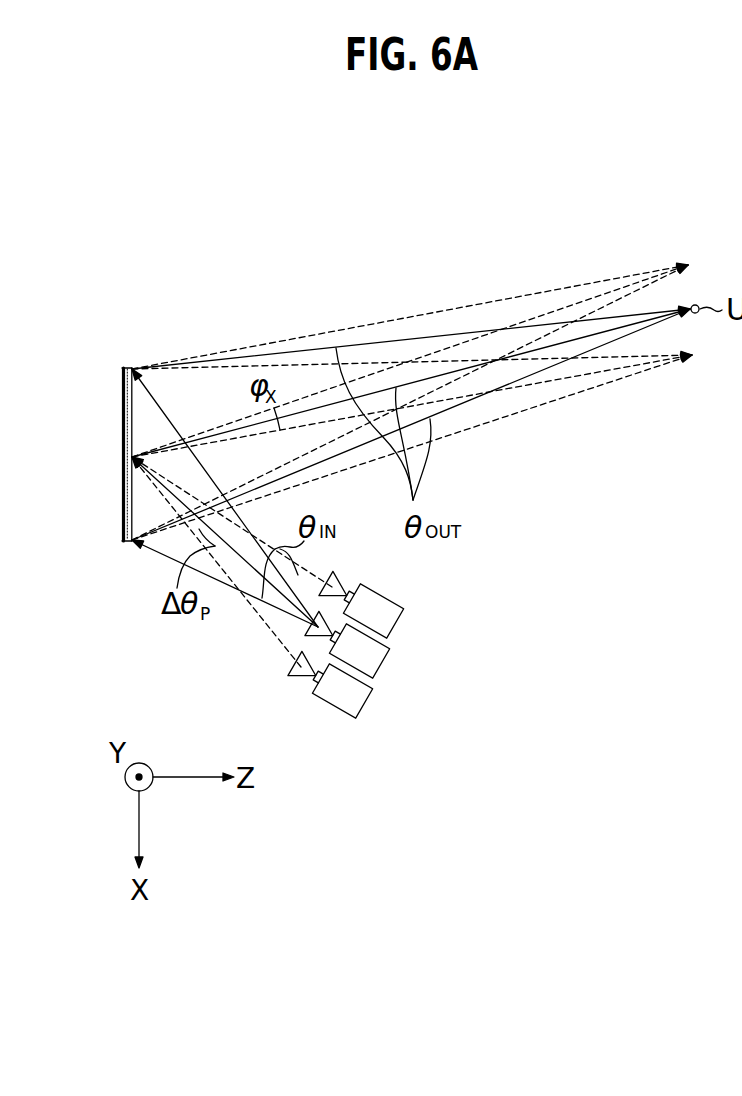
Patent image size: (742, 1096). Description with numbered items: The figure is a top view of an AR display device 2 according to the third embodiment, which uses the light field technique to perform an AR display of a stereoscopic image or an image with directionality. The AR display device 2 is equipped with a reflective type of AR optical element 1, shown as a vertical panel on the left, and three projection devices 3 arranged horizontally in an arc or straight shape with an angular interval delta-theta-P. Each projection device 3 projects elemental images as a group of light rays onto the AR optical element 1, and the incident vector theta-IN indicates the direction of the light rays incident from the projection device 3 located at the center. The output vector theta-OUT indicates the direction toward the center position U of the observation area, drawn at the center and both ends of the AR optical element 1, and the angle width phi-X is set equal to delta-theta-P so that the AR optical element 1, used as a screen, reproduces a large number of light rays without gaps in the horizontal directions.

The AR optical element 1 is at (122, 456).
The AR display device 2 is at (110, 409).
The projection device 3 is at (398, 622).